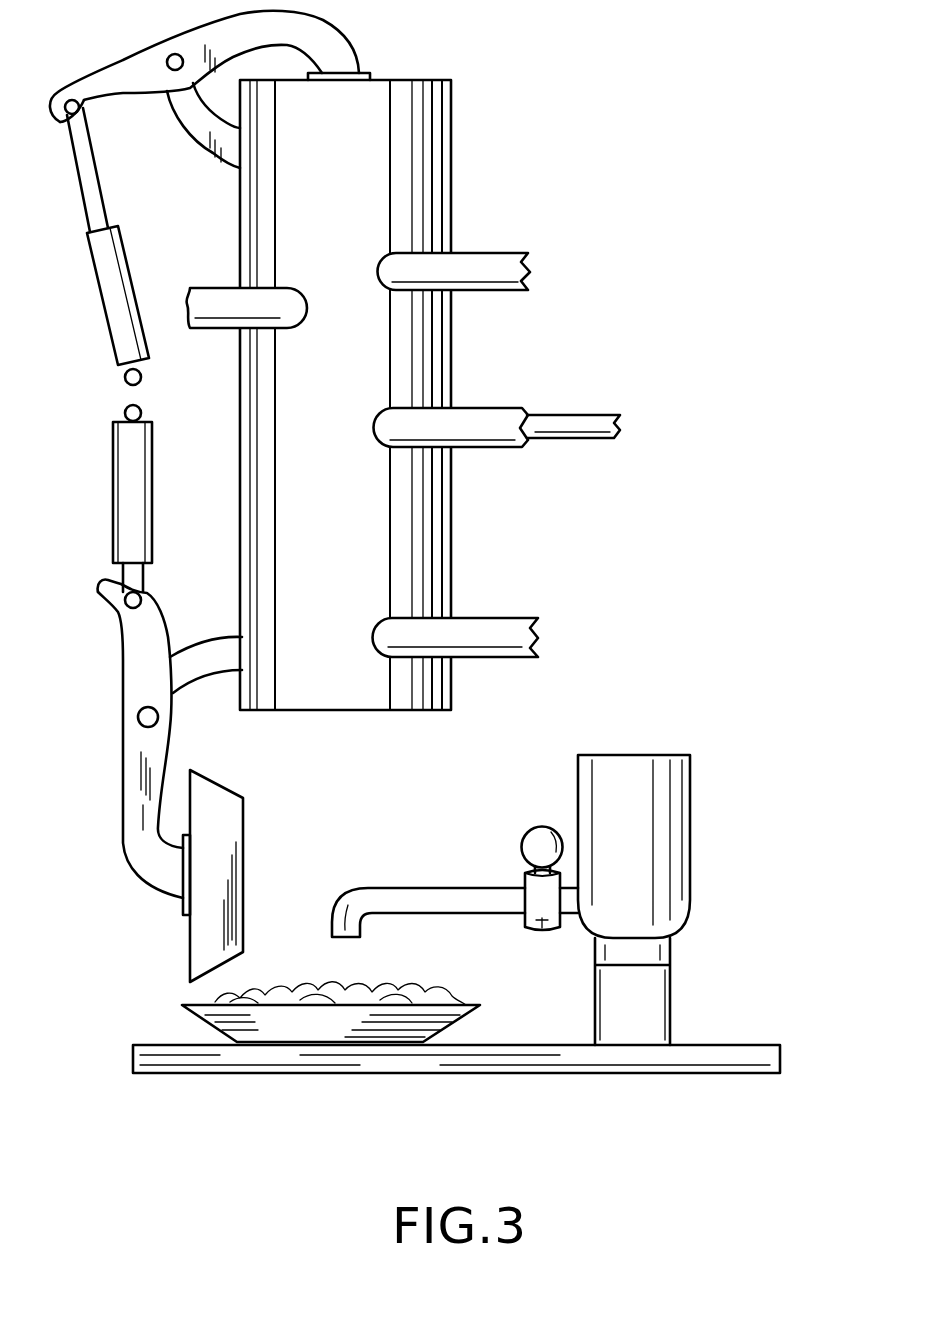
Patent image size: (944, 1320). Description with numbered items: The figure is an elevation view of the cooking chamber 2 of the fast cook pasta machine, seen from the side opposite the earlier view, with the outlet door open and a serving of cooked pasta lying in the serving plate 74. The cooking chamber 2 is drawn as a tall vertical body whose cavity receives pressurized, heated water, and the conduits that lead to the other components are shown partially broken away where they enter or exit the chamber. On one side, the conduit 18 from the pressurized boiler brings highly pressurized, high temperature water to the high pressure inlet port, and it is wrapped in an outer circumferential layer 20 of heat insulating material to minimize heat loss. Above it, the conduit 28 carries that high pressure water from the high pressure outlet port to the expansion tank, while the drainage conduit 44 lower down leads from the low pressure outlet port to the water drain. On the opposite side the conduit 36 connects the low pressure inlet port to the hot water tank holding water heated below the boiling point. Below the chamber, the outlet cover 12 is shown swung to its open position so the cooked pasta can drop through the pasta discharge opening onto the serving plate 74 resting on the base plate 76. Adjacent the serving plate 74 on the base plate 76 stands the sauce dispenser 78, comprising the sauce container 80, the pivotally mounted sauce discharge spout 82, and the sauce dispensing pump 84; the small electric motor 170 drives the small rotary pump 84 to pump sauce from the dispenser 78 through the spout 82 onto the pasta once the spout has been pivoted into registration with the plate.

The cooking chamber 2 is at (445, 520).
The outlet cover 12 is at (238, 820).
The conduit 18 is at (572, 434).
The outer circumferential layer of heat insulating material 20 is at (528, 410).
The conduit 28 is at (482, 256).
The conduit 36 is at (218, 296).
The drainage conduit 44 is at (527, 632).
The serving plate 74 is at (222, 1036).
The base plate 76 is at (312, 1066).
The sauce dispenser 78 is at (680, 800).
The sauce container 80 is at (682, 897).
The sauce discharge spout 82 is at (413, 892).
The sauce dispensing pump 84 is at (548, 928).
The small electric motor 170 is at (537, 836).